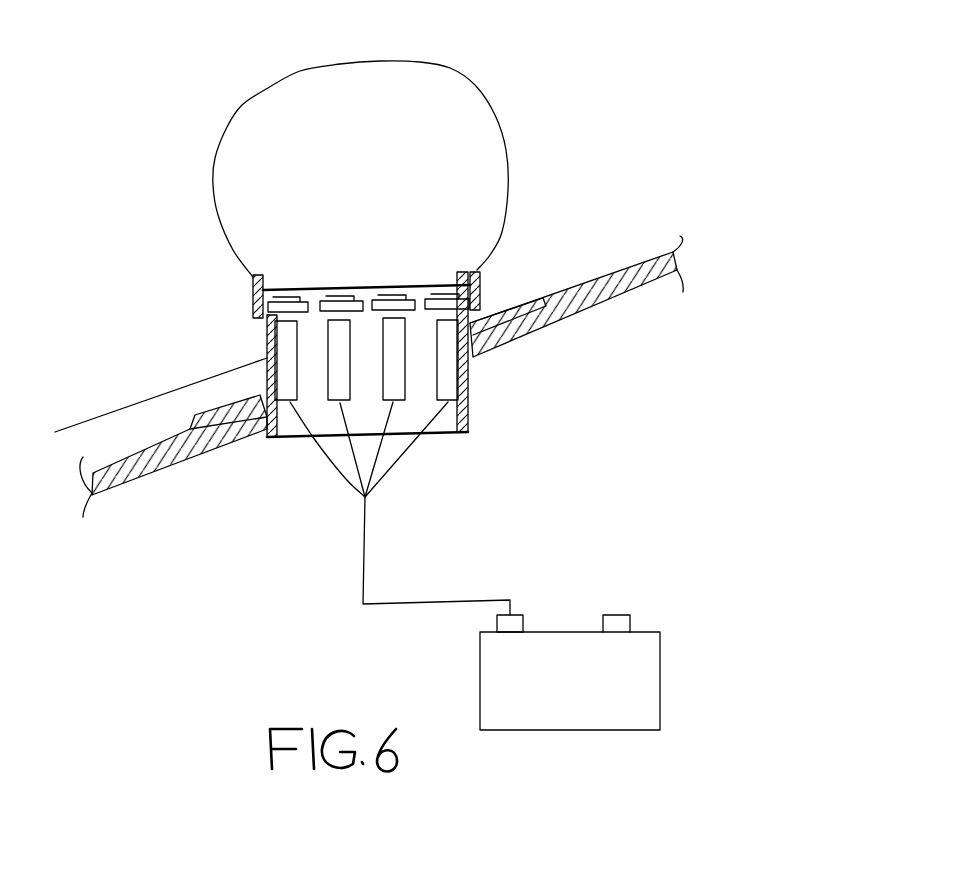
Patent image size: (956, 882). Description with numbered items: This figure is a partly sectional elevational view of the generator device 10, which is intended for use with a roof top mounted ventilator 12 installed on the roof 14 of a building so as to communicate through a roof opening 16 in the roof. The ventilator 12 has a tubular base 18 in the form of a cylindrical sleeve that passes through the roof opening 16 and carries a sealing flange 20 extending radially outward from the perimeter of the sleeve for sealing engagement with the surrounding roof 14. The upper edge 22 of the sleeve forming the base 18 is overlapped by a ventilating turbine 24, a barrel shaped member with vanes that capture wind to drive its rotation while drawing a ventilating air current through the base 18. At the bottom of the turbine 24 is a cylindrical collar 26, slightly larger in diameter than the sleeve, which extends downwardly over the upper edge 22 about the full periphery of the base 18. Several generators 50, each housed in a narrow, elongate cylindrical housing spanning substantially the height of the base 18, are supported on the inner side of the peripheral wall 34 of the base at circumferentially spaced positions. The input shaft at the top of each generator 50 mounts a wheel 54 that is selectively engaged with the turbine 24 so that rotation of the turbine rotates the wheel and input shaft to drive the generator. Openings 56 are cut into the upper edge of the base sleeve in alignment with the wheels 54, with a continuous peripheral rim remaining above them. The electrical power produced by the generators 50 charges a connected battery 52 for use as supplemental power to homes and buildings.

The generator device 10 is at (266, 610).
The roof top mounted ventilator 12 is at (138, 208).
The roof 14 is at (623, 263).
The roof opening 16 is at (495, 392).
The tubular base 18 is at (173, 350).
The sealing flange 20 is at (532, 297).
The upper edge 22 is at (417, 283).
The ventilating turbine 24 is at (510, 72).
The cylindrical collar 26 is at (253, 293).
The peripheral wall 34 is at (134, 406).
The generator 50 is at (397, 367).
The battery 52 is at (568, 630).
The wheel 54 is at (313, 297).
The openings 56 is at (353, 290).